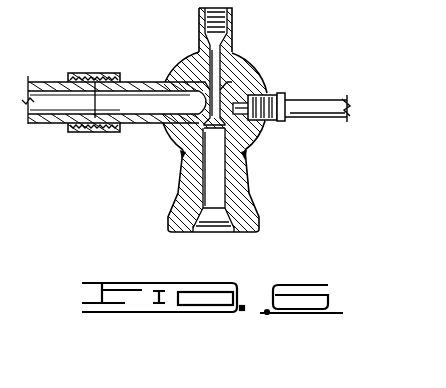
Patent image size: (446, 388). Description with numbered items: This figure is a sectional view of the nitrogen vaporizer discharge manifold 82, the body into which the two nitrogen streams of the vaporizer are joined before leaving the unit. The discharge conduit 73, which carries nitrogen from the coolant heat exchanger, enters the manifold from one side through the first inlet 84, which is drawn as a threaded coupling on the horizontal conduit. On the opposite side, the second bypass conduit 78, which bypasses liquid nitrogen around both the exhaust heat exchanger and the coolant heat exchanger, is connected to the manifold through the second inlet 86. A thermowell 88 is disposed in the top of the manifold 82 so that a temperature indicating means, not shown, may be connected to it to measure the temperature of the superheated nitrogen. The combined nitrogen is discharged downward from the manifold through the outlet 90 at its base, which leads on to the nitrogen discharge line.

The discharge conduit 73 is at (61, 82).
The first inlet 84 is at (88, 105).
The thermowell 88 is at (232, 17).
The discharge manifold 82 is at (262, 59).
The second inlet 86 is at (268, 95).
The second bypass conduit 78 is at (318, 113).
The outlet 90 is at (220, 233).